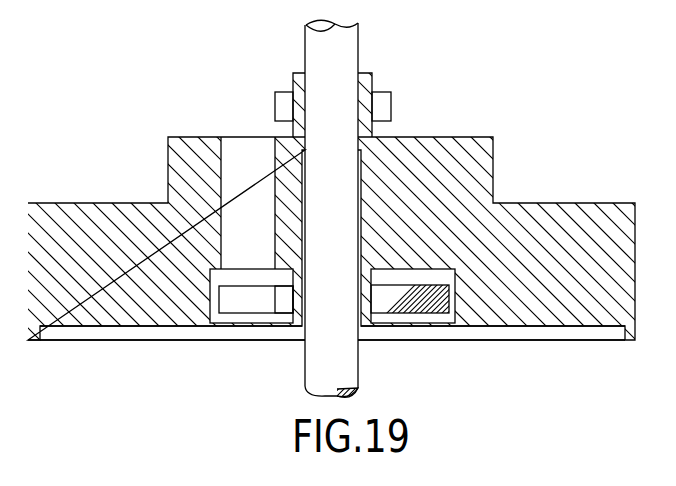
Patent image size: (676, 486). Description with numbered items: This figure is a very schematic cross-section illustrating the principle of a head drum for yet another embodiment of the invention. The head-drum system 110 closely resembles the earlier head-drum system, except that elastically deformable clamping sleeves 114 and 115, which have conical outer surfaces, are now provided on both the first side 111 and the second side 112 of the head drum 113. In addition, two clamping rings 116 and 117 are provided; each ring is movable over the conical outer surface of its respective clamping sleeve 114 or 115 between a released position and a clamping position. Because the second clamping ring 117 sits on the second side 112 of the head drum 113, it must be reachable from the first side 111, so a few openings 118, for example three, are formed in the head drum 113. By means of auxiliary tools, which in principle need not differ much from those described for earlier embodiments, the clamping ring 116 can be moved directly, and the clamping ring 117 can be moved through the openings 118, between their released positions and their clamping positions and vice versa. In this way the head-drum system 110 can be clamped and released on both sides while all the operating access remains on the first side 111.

The head-drum system 110 is at (533, 191).
The first side 111 is at (437, 137).
The second side 112 is at (468, 324).
The head drum 113 is at (612, 224).
The clamping sleeve 114 is at (302, 90).
The clamping sleeve 115 is at (302, 312).
The clamping ring 116 is at (386, 101).
The second clamping ring 117 is at (408, 308).
The openings 118 is at (232, 150).